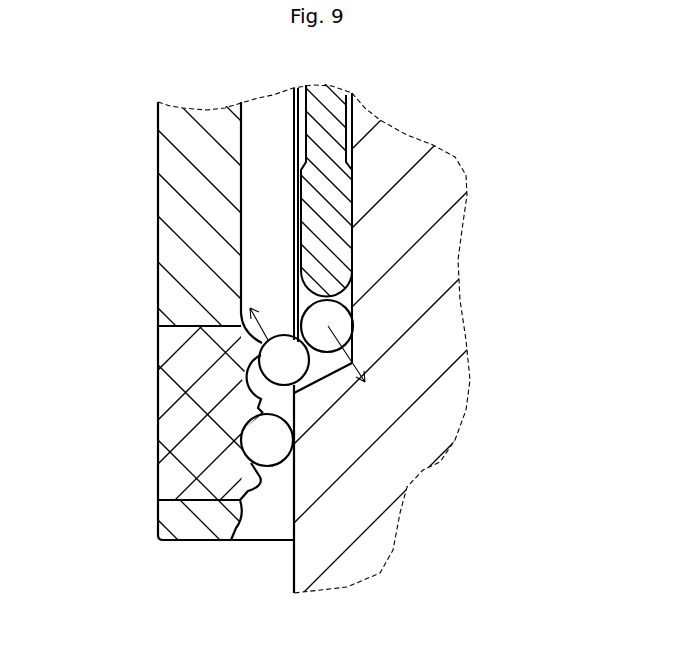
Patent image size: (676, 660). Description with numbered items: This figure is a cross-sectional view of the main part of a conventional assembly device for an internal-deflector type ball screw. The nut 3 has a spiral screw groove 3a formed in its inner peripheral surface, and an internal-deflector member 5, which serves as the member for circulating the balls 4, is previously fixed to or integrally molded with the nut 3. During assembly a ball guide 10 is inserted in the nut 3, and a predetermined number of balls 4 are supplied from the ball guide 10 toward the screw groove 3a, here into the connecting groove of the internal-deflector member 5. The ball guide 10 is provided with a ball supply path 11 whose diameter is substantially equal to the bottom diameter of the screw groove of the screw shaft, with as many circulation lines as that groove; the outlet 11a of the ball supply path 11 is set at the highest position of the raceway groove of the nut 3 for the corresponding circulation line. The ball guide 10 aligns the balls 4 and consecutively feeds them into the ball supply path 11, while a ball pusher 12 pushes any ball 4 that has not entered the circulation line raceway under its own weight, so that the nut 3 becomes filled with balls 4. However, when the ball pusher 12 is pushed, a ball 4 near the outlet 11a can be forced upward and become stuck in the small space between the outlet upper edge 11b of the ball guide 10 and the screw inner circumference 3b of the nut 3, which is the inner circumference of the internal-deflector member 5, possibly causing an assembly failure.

The nut 3 is at (158, 187).
The screw groove 3a is at (272, 470).
The screw inner circumference 3b is at (272, 374).
The balls 4 is at (258, 442).
The internal-deflector member 5 is at (178, 469).
The ball guide 10 is at (466, 399).
The ball supply path 11 is at (352, 105).
The outlet 11a is at (306, 382).
The outlet upper edge 11b is at (258, 343).
The ball pusher 12 is at (332, 208).